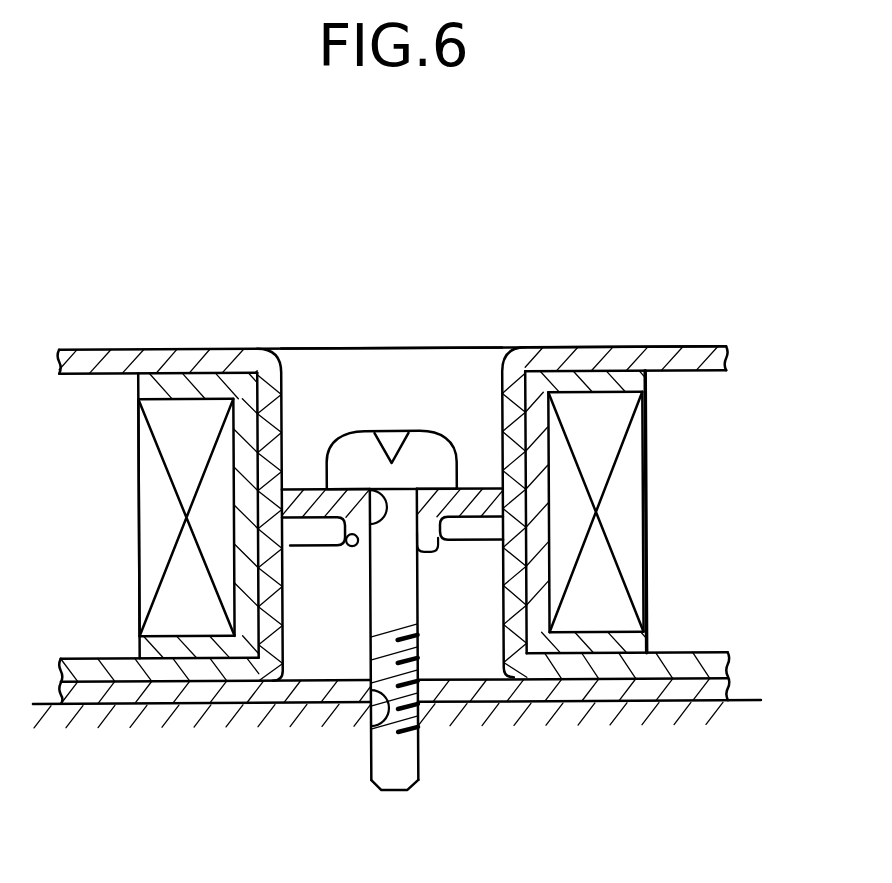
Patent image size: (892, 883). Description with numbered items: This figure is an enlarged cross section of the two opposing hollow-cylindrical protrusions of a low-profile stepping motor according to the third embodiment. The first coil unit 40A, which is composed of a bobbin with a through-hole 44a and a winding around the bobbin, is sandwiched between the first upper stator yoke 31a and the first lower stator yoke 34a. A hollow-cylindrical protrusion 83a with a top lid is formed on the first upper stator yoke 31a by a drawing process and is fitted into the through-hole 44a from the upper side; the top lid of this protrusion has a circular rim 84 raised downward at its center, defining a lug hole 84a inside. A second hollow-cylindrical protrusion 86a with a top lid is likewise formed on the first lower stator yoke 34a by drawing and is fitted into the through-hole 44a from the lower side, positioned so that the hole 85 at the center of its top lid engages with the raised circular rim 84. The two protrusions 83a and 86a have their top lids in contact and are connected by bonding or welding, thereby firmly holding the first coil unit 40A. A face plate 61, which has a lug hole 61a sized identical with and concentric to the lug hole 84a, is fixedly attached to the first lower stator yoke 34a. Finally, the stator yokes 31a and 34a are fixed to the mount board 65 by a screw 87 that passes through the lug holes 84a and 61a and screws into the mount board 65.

The first upper stator yoke 31a is at (601, 360).
The first lower stator yoke 34a is at (640, 667).
The first coil unit 40A is at (662, 540).
The through-hole 44a is at (273, 412).
The face plate 61 is at (91, 693).
The lug hole 61a is at (373, 727).
The mount board 65 is at (573, 708).
The hollow-cylindrical protrusion 83a is at (398, 367).
The raised circular rim 84 is at (427, 553).
The lug hole 84a is at (385, 492).
The hole 85 is at (353, 545).
The hollow-cylindrical protrusion 86a is at (318, 636).
The screw 87 is at (398, 778).